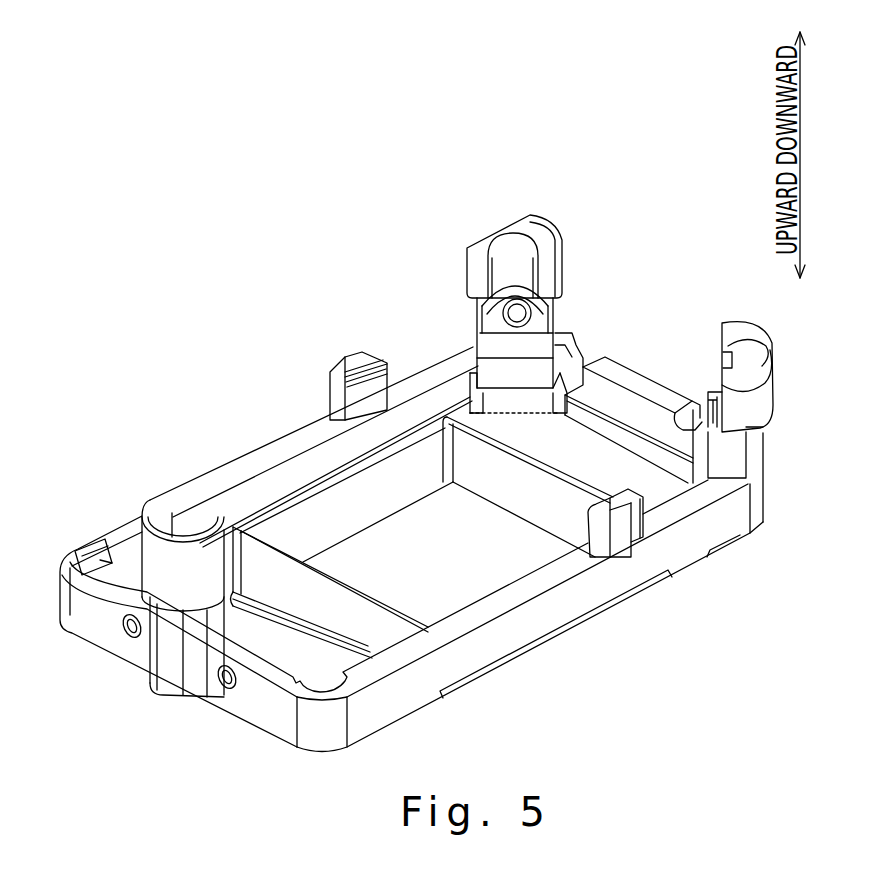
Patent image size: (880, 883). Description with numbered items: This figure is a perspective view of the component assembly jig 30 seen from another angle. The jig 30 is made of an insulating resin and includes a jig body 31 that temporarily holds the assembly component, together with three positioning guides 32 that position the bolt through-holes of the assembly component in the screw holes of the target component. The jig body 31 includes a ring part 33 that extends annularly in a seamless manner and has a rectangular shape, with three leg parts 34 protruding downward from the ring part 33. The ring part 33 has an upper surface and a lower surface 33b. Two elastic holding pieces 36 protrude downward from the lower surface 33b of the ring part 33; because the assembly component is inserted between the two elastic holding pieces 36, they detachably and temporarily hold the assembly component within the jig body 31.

The component assembly jig 30 is at (452, 452).
The jig body 31 is at (233, 458).
The positioning guide 32 is at (150, 503).
The ring part 33 is at (426, 459).
The lower surface 33b is at (263, 452).
The leg part 34 is at (167, 619).
The elastic holding piece 36 is at (350, 360).